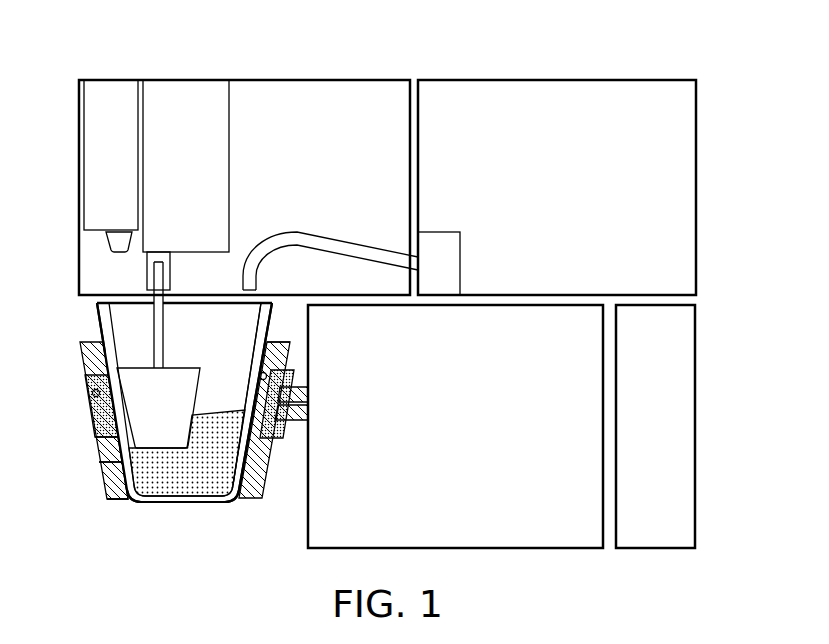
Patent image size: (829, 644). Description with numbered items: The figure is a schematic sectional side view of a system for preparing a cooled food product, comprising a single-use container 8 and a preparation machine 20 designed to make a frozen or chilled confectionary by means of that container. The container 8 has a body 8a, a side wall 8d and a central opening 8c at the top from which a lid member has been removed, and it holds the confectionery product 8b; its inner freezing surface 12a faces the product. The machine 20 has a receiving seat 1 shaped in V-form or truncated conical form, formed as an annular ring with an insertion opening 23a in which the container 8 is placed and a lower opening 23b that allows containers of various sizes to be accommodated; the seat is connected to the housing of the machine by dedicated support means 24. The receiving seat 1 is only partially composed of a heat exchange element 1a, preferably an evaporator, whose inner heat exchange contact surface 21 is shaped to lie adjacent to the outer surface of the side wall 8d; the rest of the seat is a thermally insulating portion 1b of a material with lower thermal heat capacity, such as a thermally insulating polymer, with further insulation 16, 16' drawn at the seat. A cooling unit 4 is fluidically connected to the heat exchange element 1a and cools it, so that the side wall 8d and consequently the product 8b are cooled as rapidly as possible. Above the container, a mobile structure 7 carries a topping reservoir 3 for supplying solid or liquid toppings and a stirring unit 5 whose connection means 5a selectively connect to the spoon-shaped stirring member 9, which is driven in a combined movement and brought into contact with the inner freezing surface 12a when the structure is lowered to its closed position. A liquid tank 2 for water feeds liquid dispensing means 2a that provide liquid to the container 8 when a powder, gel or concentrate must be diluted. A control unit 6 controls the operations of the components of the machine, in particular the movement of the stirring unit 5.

The preparation machine 20 is at (593, 65).
The liquid tank 2 is at (697, 188).
The liquid dispensing means 2a is at (301, 232).
The topping reservoir 3 is at (113, 164).
The stirring unit 5 is at (192, 172).
The connection means 5a is at (148, 275).
The mobile structure 7 is at (79, 259).
The single-use container 8 is at (203, 503).
The body of the container 8a is at (266, 322).
The confectionery product 8b is at (173, 488).
The central opening 8c is at (110, 305).
The side wall 8d is at (102, 327).
The stirring member 9 is at (164, 414).
The inner freezing surface 12a is at (252, 382).
The receiving seat 1 is at (82, 350).
The heat exchange element 1a is at (95, 417).
The thermally insulating portion 1b is at (100, 443).
The thermal insulation 16 is at (271, 420).
The thermal insulation 16' is at (93, 480).
The inner heat exchange contact surface 21 is at (93, 394).
The insertion opening 23a is at (274, 339).
The lower opening 23b is at (138, 503).
The support means 24 is at (296, 419).
The cooling unit 4 is at (461, 438).
The control unit 6 is at (685, 428).